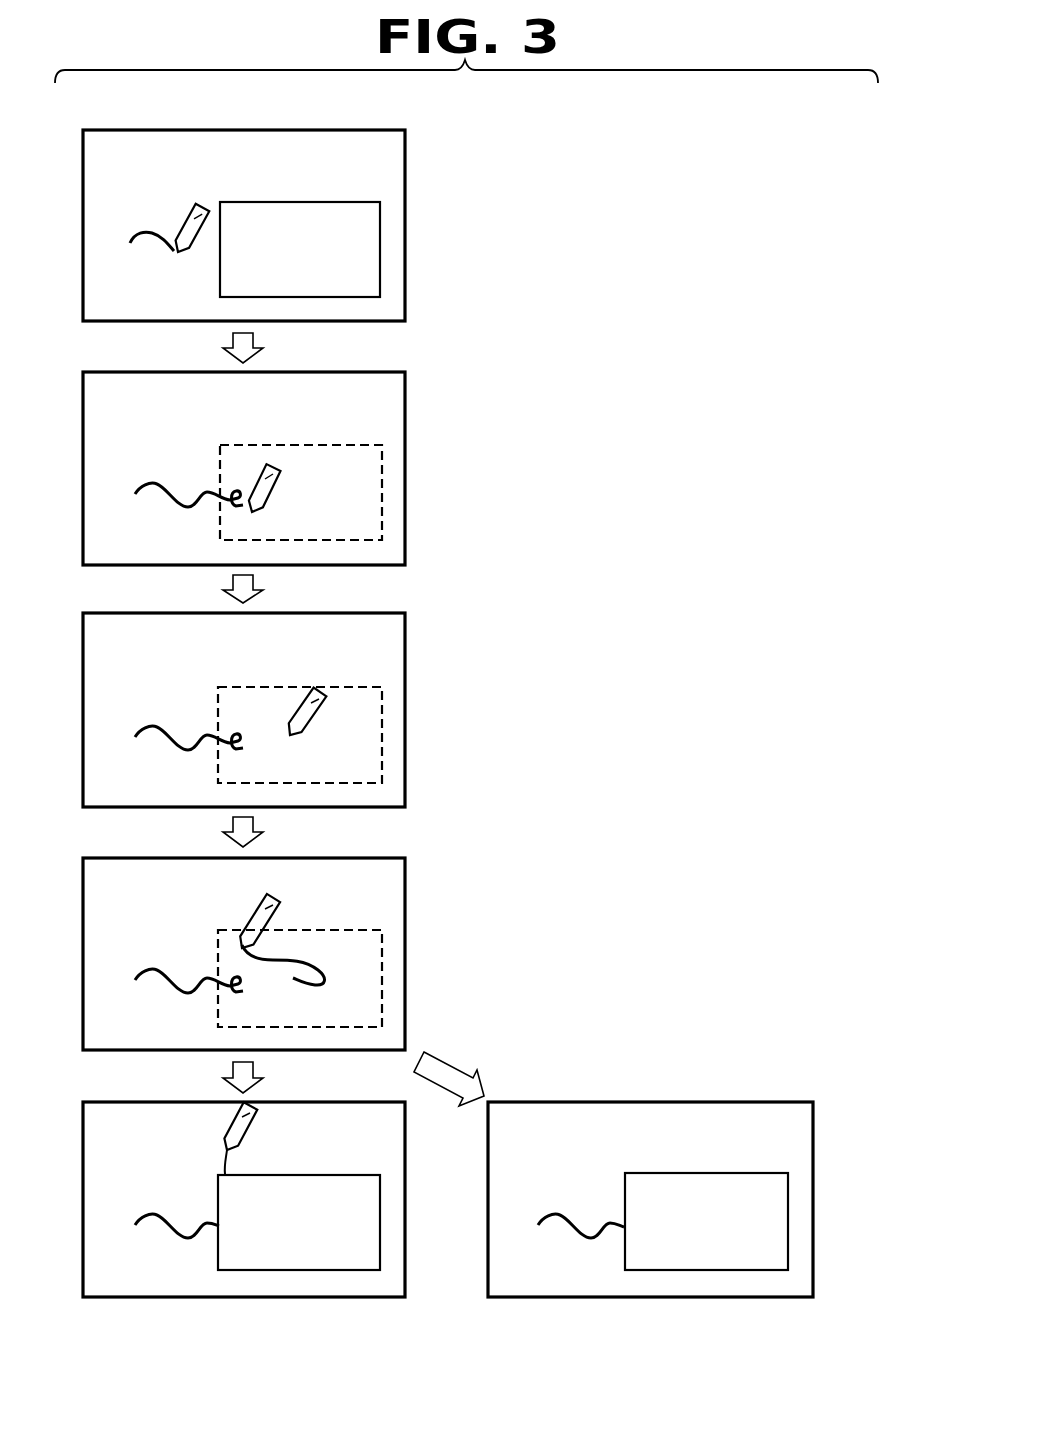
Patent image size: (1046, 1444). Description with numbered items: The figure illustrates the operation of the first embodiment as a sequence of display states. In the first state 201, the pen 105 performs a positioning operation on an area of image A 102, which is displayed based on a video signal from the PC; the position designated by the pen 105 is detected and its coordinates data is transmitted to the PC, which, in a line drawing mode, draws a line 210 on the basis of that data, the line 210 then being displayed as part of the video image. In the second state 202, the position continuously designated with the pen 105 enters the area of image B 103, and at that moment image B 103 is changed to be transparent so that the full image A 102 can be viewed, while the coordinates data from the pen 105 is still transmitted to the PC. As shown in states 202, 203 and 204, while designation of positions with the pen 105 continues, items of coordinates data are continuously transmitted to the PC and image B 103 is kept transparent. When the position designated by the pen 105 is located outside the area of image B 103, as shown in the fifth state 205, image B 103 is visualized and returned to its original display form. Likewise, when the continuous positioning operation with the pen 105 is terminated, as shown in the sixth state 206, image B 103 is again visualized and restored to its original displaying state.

The image A 102 is at (338, 147).
The image B 103 is at (373, 230).
The pen 105 is at (206, 204).
The line 210 is at (140, 243).
The first operation state 201 is at (428, 148).
The second operation state 202 is at (428, 391).
The third operation state 203 is at (428, 633).
The fourth operation state 204 is at (428, 877).
The fifth operation state 205 is at (152, 1091).
The sixth operation state 206 is at (648, 1072).